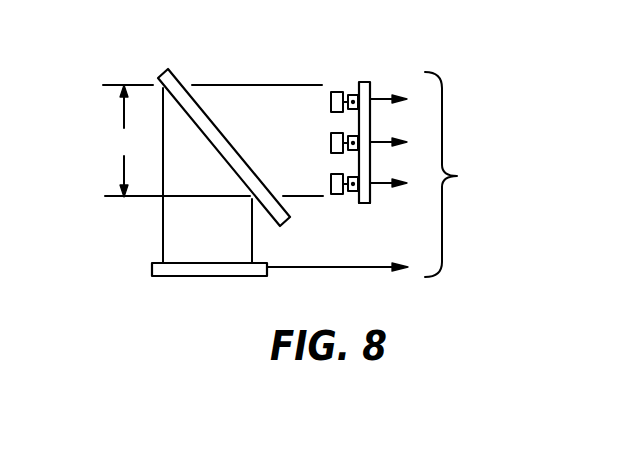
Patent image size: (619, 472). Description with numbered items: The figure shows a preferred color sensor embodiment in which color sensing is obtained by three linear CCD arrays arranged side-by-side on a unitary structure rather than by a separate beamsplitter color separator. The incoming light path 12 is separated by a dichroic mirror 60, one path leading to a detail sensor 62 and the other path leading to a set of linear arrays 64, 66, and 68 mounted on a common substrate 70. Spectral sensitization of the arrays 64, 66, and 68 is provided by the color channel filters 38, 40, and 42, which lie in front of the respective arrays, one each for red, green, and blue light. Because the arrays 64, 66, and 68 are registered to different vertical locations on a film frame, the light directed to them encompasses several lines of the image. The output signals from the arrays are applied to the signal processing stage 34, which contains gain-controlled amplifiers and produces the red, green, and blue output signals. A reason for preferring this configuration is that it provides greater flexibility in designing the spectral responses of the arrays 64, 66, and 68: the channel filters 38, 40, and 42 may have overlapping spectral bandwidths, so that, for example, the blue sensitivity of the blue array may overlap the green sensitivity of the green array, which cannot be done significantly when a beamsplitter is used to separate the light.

The light path 12 is at (124, 141).
The signal processing stage 34 is at (506, 174).
The color channel filter 38 is at (331, 102).
The color channel filter 40 is at (331, 143).
The color channel filter 42 is at (331, 183).
The dichroic mirror 60 is at (178, 78).
The detail sensor 62 is at (152, 269).
The linear array 64 is at (351, 93).
The linear array 66 is at (365, 119).
The linear array 68 is at (357, 200).
The common substrate 70 is at (372, 88).